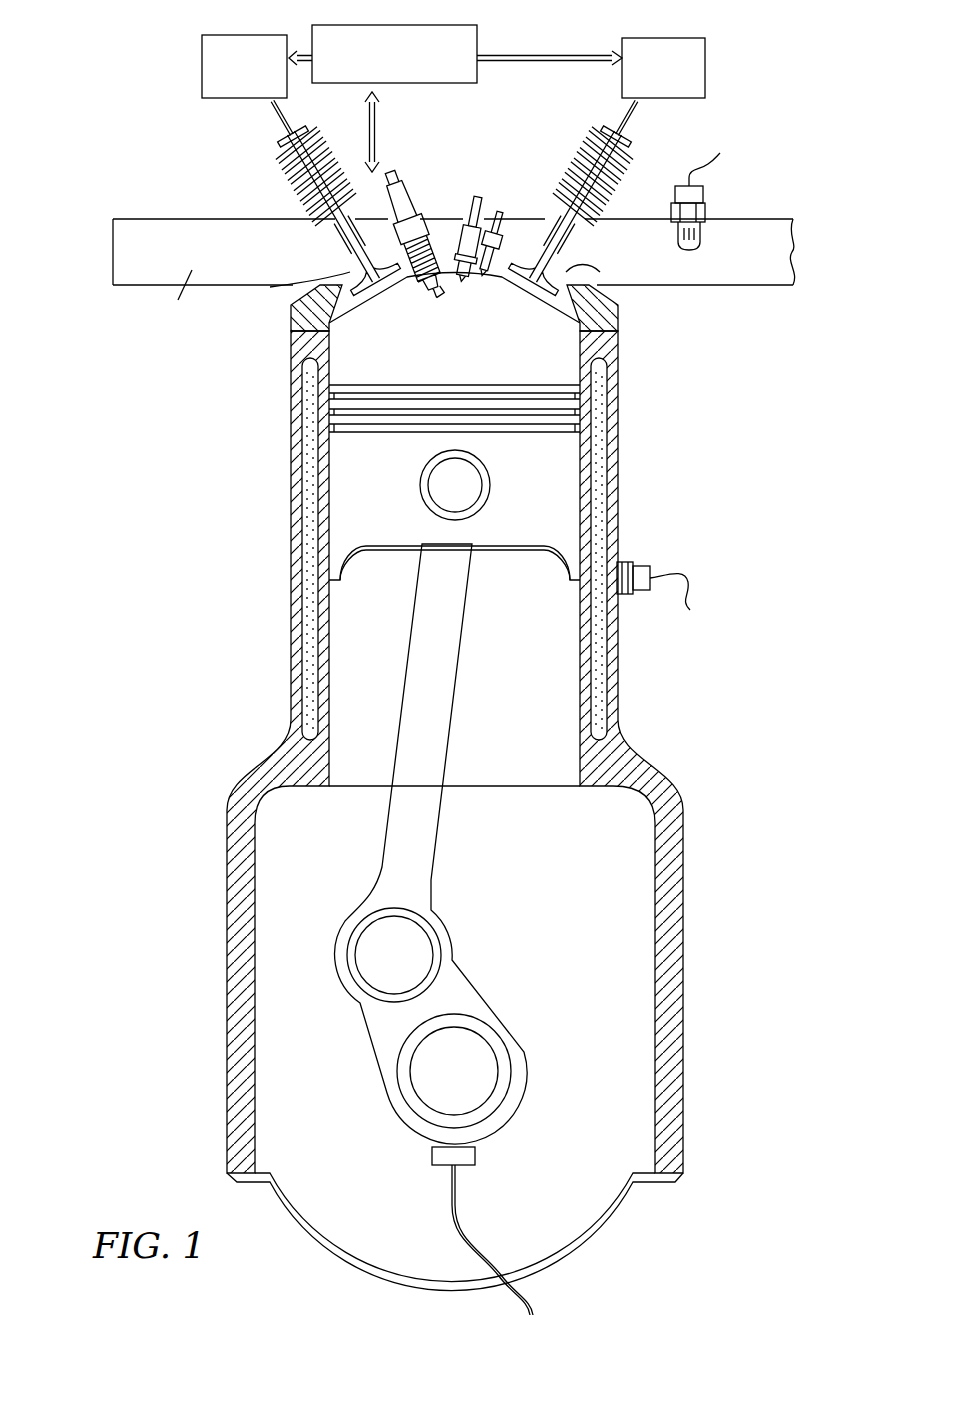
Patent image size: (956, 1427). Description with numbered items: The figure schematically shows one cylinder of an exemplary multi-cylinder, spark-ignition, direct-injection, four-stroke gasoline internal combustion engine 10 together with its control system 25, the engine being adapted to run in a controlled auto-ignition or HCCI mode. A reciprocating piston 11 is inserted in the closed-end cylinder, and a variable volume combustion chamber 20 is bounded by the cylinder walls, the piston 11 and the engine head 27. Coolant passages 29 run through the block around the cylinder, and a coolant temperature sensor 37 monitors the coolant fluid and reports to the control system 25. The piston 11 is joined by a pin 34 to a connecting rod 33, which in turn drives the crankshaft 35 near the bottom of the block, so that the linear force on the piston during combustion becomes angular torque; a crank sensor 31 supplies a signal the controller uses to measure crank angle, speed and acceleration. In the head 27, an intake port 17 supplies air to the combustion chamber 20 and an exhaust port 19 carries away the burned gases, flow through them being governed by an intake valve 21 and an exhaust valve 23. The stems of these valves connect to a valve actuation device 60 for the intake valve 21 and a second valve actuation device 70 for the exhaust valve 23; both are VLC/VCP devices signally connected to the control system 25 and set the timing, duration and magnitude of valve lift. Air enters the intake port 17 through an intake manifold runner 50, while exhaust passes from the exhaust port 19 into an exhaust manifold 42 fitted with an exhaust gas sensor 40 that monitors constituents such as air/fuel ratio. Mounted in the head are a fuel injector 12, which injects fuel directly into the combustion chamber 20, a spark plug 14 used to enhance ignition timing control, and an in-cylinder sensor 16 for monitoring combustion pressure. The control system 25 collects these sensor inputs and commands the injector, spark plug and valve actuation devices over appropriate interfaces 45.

The internal combustion engine 10 is at (140, 421).
The piston 11 is at (548, 490).
The fuel injector 12 is at (472, 212).
The spark plug 14 is at (406, 185).
The in-cylinder sensor 16 is at (498, 214).
The intake port 17 is at (340, 288).
The exhaust port 19 is at (566, 272).
The combustion chamber 20 is at (350, 360).
The intake valve 21 is at (350, 237).
The exhaust valve 23 is at (557, 258).
The control system 25 is at (470, 35).
The engine head 27 is at (618, 318).
The coolant passages 29 is at (600, 405).
The crank sensor 31 is at (430, 1160).
The connecting rod 33 is at (430, 645).
The pin 34 is at (445, 485).
The crankshaft 35 is at (395, 1072).
The coolant temperature sensor 37 is at (645, 572).
The exhaust gas sensor 40 is at (706, 212).
The exhaust manifold 42 is at (780, 252).
The interfaces 45 is at (385, 128).
The intake manifold runner 50 is at (190, 277).
The valve actuation device 60 is at (207, 45).
The second valve actuation device 70 is at (697, 52).